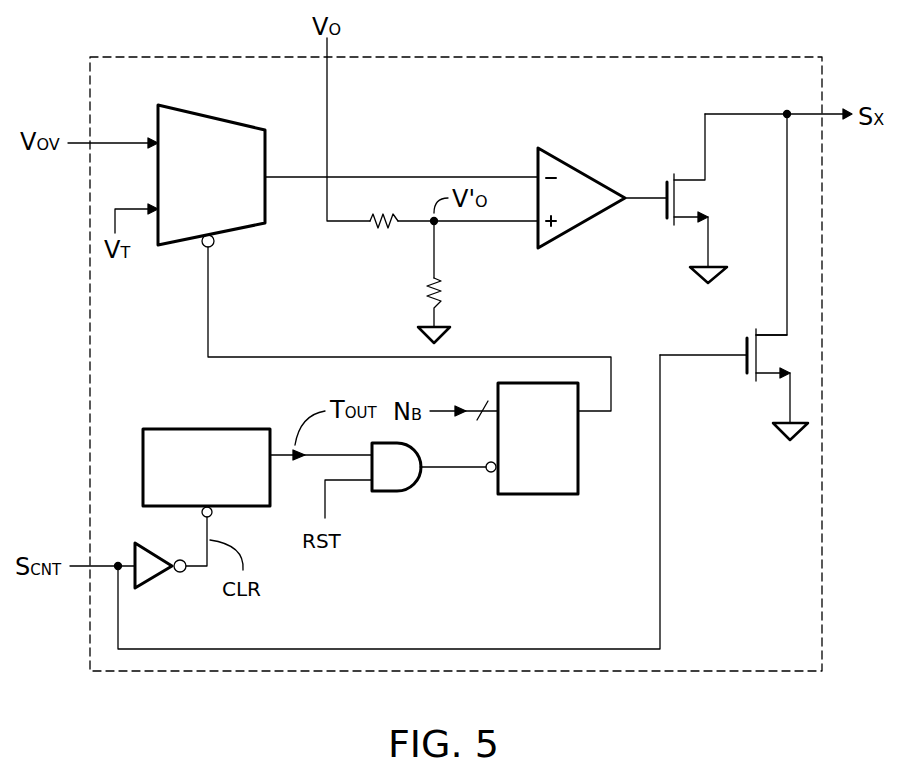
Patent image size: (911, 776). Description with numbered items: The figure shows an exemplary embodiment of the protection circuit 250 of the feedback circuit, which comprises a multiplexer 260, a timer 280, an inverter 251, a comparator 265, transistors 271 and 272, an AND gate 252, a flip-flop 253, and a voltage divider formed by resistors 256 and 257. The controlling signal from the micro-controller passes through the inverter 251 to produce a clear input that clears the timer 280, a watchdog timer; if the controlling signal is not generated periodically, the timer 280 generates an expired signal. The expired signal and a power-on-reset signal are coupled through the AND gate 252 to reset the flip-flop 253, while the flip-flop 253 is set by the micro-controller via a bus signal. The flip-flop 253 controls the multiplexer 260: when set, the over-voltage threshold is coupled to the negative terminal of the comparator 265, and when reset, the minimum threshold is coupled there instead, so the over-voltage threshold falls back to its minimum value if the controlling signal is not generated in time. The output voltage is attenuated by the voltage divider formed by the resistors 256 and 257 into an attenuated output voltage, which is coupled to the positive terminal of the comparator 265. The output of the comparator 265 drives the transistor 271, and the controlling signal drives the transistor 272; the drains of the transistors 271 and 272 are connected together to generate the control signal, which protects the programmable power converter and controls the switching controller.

The protection circuit 250 is at (725, 672).
The inverter 251 is at (150, 590).
The AND gate 252 is at (392, 493).
The flip-flop 253 is at (540, 497).
The resistor 256 is at (385, 240).
The resistor 257 is at (447, 297).
The multiplexer 260 is at (218, 113).
The comparator 265 is at (578, 233).
The transistor 271 is at (705, 201).
The transistor 272 is at (767, 385).
The timer 280 is at (200, 428).